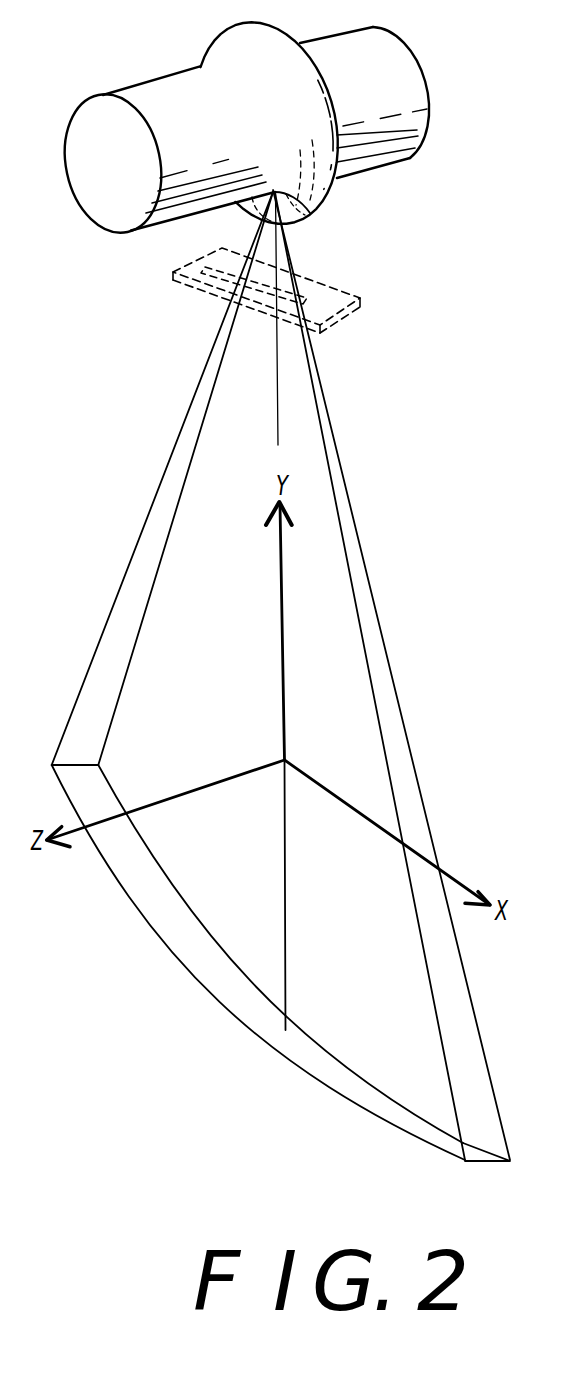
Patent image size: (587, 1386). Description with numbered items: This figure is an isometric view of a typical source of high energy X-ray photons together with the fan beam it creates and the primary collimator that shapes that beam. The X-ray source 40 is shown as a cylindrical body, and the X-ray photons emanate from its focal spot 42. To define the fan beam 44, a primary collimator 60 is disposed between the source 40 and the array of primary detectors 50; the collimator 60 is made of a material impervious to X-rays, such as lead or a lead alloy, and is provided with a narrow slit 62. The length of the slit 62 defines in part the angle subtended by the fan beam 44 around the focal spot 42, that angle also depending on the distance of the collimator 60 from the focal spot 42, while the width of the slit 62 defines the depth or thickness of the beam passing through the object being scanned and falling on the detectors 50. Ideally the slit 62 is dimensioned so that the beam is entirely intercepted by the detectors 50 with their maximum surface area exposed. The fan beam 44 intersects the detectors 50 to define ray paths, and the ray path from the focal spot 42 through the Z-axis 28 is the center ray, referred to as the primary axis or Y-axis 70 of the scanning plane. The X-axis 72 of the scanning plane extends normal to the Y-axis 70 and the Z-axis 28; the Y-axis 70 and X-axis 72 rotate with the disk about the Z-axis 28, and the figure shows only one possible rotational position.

The X-ray source 40 is at (420, 143).
The focal spot 42 is at (312, 208).
The fan beam 44 is at (360, 577).
The array of primary detectors 50 is at (317, 1066).
The primary collimator 60 is at (337, 322).
The slit 62 is at (190, 268).
The Y-axis 70 is at (282, 882).
The X-axis 72 is at (313, 780).
The Z-axis 28 is at (209, 785).